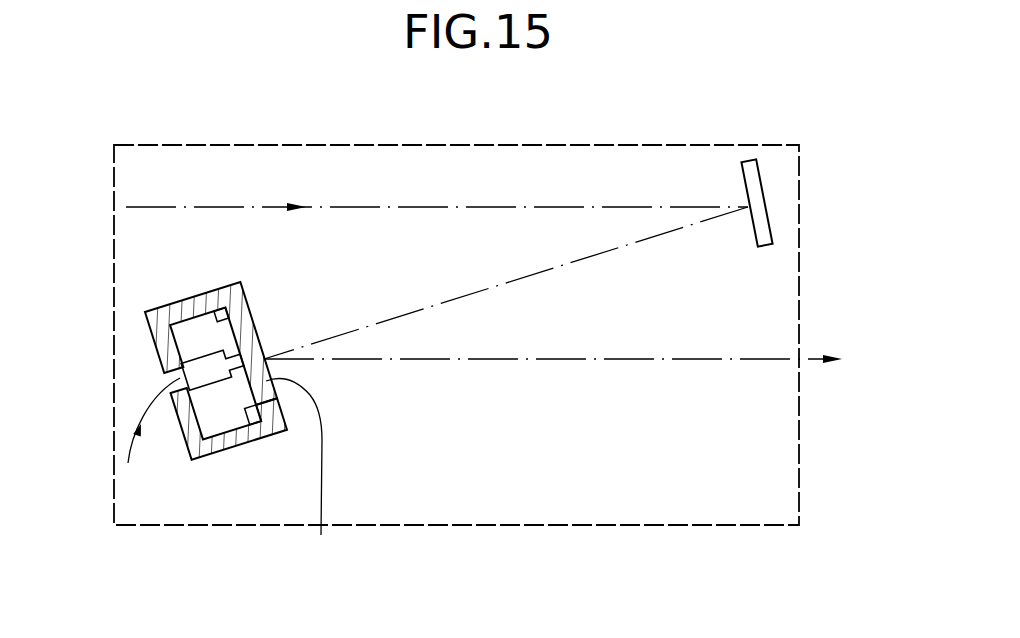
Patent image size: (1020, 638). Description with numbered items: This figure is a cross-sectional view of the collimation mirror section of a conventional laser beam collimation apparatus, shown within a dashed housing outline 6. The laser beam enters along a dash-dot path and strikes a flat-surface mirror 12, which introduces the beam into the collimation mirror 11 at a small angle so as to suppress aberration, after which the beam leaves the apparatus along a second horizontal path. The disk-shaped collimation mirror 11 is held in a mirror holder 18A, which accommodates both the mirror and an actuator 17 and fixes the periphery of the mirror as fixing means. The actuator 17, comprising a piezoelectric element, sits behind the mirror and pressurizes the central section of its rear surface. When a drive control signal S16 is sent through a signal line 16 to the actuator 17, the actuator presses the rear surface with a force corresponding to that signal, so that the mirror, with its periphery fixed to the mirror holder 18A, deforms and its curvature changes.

The housing 6 is at (608, 141).
The flat-surface mirror 12 is at (765, 198).
The mirror holder 18A is at (198, 294).
The actuator 17 is at (210, 388).
The collimation mirror 11 is at (306, 471).
The signal line 16 is at (128, 464).
The drive control signal S16 is at (150, 402).